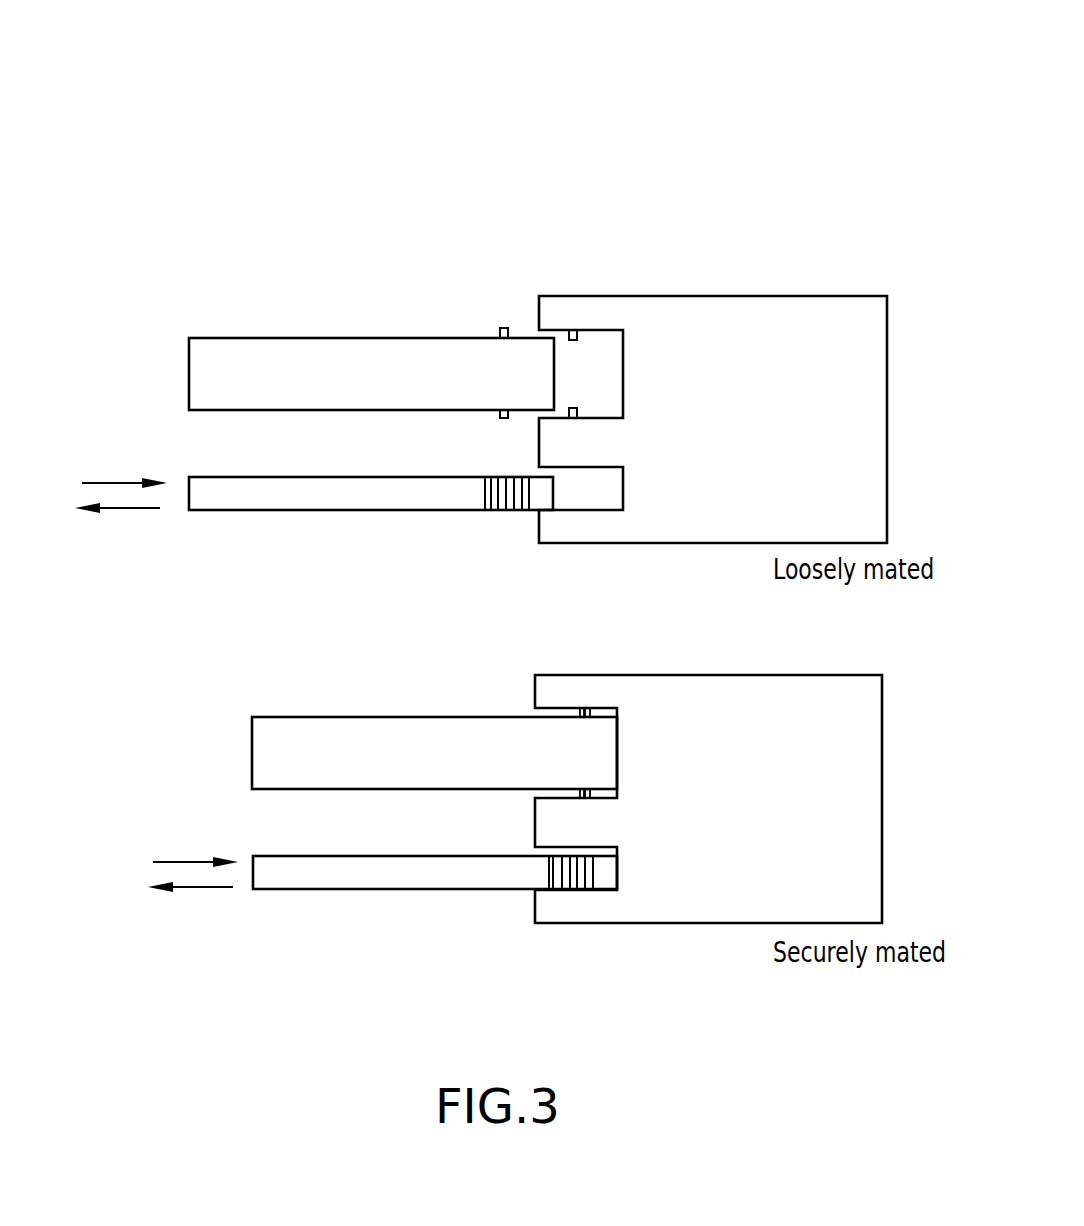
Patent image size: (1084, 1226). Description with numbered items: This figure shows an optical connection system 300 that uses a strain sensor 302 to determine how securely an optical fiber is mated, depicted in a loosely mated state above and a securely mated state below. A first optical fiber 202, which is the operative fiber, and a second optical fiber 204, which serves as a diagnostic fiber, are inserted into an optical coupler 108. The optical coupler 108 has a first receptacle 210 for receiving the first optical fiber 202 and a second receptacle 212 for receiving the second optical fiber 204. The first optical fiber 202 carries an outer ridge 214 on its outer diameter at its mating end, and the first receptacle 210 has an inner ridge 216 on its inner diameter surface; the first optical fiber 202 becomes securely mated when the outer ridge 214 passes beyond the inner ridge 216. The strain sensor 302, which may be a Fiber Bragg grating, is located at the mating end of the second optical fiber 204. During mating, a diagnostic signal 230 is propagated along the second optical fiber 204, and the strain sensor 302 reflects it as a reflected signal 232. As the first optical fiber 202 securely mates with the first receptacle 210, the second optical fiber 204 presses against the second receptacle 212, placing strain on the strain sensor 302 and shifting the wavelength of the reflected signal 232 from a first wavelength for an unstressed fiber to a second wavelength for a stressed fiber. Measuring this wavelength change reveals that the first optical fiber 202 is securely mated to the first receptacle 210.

The optical connection system 300 is at (829, 130).
The optical coupler 108 is at (746, 295).
The first optical fiber 202 is at (370, 338).
The second optical fiber 204 is at (367, 510).
The first receptacle 210 is at (622, 365).
The second receptacle 212 is at (615, 494).
The outer ridge 214 is at (590, 708).
The inner ridge 216 is at (582, 708).
The diagnostic signal 230 is at (120, 480).
The reflected signal 232 is at (133, 508).
The strain sensor 302 is at (485, 498).